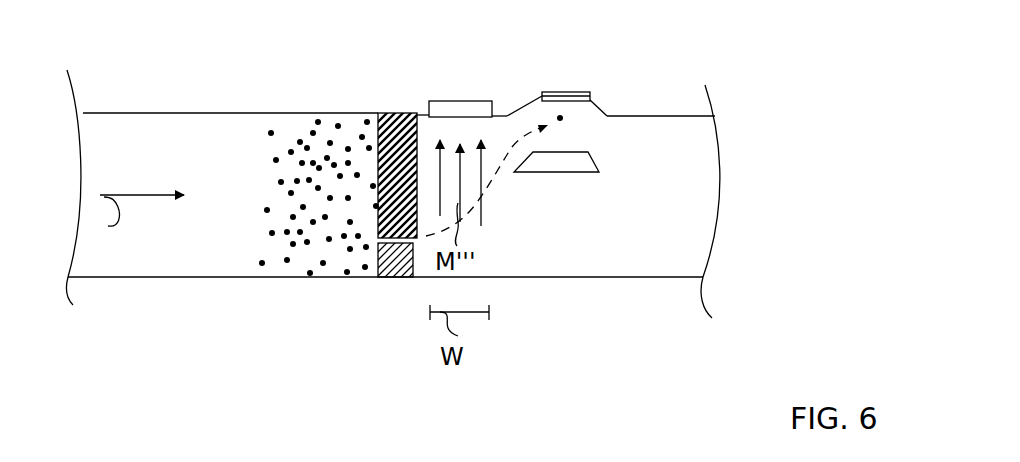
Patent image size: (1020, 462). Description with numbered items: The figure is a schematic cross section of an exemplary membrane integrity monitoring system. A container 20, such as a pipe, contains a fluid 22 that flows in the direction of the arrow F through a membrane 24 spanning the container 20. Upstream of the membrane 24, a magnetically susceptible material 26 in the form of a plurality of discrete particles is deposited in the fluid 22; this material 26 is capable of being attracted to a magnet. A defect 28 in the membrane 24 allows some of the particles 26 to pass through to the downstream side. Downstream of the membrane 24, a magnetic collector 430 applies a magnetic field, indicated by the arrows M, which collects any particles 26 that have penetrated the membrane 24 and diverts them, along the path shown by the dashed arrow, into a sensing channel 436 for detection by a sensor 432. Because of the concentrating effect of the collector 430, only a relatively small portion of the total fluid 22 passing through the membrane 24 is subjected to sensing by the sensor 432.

The container 20 is at (163, 113).
The fluid 22 is at (184, 156).
The membrane 24 is at (403, 113).
The magnetically susceptible material 26 is at (292, 281).
The defect 28 is at (410, 244).
The magnetic collector 430 is at (455, 101).
The sensor 432 is at (580, 92).
The sensing channel 436 is at (578, 130).